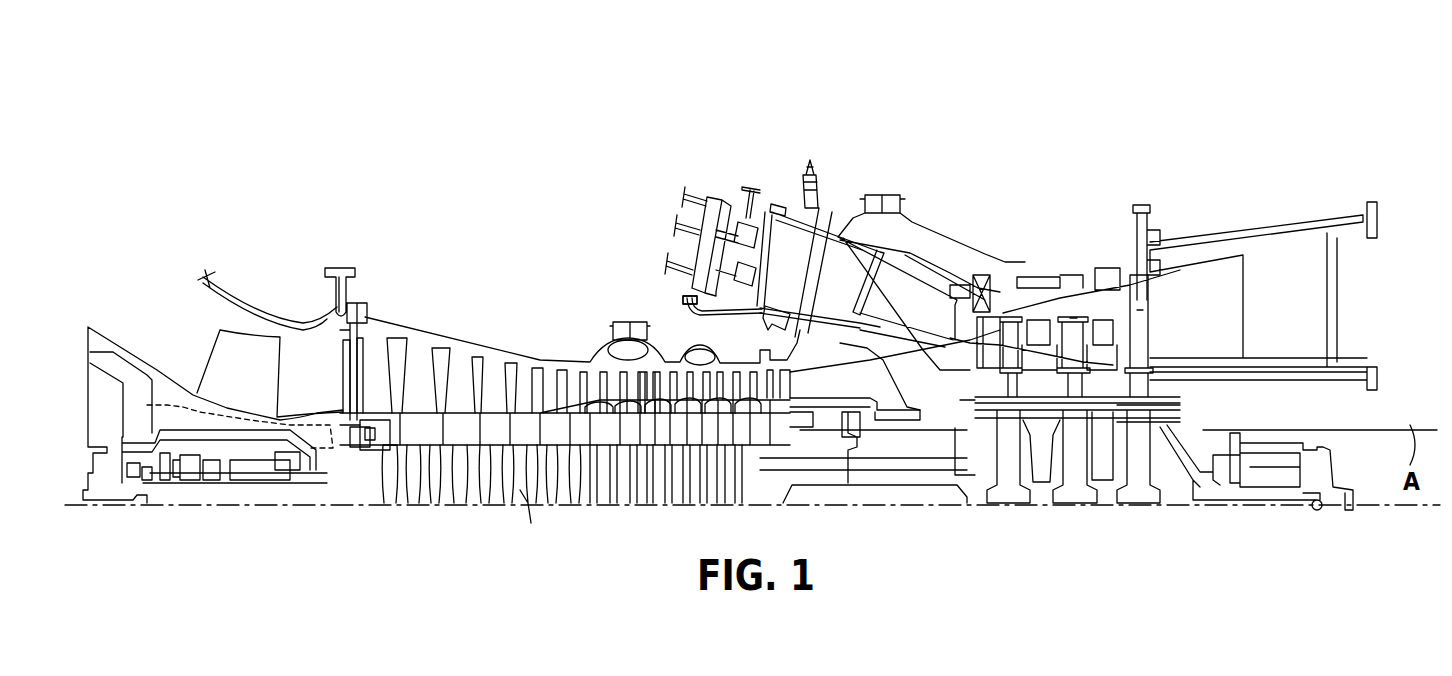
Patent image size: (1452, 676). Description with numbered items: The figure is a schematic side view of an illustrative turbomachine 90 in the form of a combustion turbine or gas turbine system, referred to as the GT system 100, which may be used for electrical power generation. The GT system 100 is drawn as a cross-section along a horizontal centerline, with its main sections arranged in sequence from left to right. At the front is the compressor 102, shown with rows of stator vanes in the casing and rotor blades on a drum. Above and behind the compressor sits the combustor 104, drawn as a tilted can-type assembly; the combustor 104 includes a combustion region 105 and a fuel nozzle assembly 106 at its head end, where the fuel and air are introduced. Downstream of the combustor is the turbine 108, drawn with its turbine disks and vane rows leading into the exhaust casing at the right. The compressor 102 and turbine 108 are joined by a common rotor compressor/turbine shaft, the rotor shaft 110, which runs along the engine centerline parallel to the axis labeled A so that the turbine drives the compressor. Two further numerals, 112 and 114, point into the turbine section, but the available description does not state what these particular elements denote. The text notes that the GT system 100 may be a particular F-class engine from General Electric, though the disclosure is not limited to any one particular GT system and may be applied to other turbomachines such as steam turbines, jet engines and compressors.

The turbomachine 90 is at (1013, 97).
The gas turbine (GT) system 100 is at (257, 145).
The compressor 102 is at (457, 342).
The combustor 104 is at (817, 147).
The combustion region 105 is at (797, 250).
The fuel nozzle assembly 106 is at (737, 197).
The turbine 108 is at (1120, 257).
The rotor shaft 110 is at (370, 457).
The turbine rotor blades 112 is at (1040, 325).
The turbine stator vanes 114 is at (1073, 317).